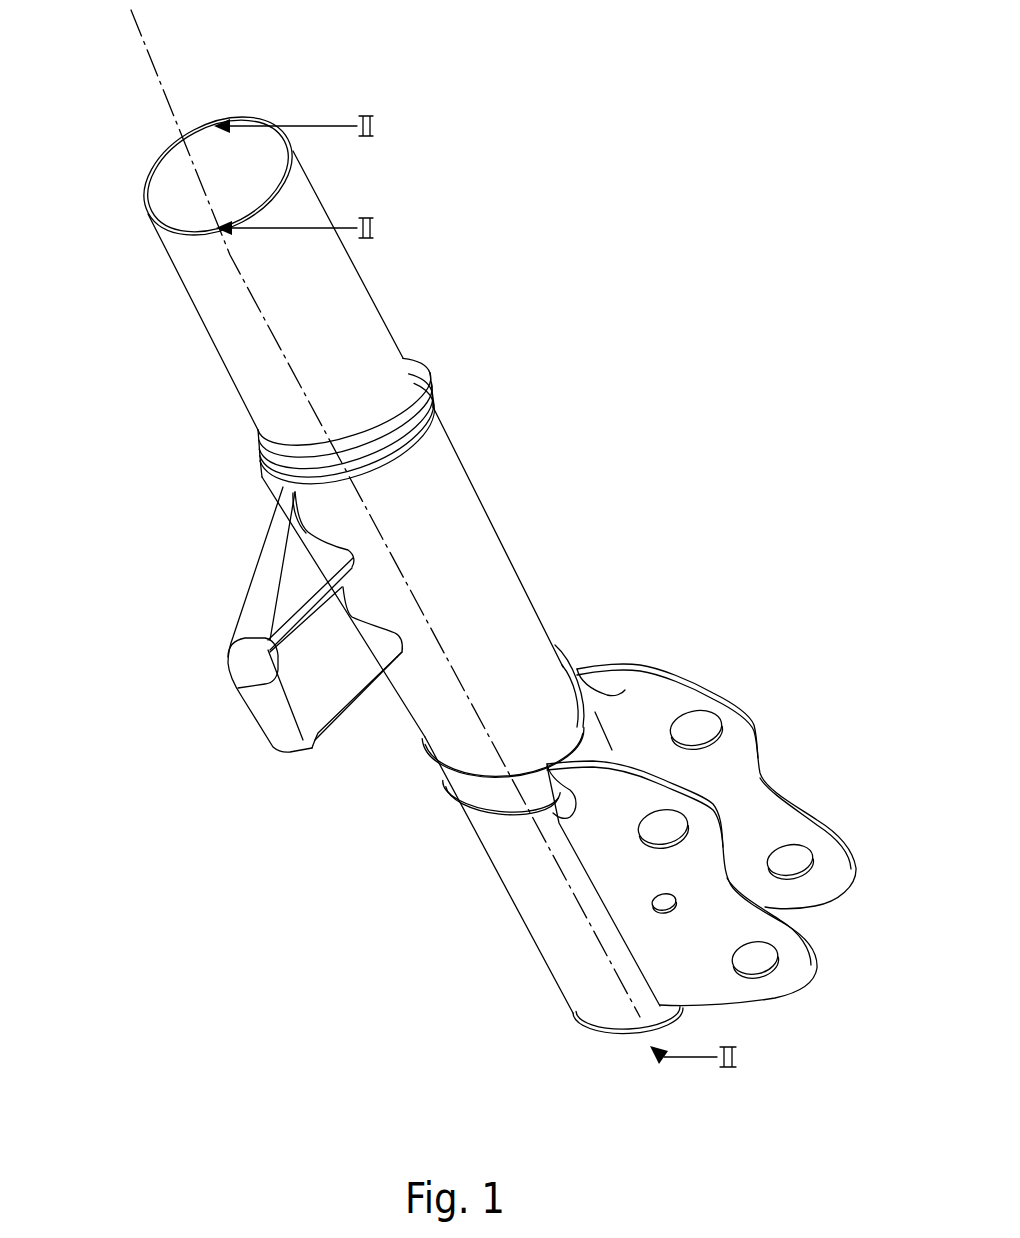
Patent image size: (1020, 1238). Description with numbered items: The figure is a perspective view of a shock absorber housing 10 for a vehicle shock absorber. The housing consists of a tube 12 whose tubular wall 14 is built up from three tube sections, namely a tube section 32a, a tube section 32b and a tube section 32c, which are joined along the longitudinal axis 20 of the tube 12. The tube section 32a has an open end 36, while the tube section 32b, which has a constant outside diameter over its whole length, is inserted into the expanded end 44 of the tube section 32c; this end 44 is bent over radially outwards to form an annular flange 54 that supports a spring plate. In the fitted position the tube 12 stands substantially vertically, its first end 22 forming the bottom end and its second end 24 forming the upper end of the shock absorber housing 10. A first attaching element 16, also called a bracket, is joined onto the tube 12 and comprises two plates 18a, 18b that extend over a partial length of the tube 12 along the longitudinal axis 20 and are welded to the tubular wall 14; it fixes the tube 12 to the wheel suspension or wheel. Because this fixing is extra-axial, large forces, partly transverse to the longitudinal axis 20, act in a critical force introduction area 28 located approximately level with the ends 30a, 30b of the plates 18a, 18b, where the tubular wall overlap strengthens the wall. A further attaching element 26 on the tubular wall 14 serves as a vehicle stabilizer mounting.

The shock absorber housing 10 is at (741, 238).
The tube 12 is at (394, 596).
The tubular wall 14 is at (494, 584).
The first attaching element 16 is at (616, 786).
The plate 18a is at (716, 737).
The plate 18b is at (616, 883).
The longitudinal axis 20 is at (148, 53).
The first end 22 is at (605, 1014).
The second end 24 is at (181, 258).
The further attaching element 26 is at (279, 625).
The critical force introduction area 28 is at (571, 707).
The end of plate 30a is at (587, 677).
The end of plate 30b is at (543, 822).
The tube section 32a is at (542, 918).
The tube section 32b is at (476, 560).
The tube section 32c is at (327, 272).
The open end 36 is at (472, 792).
The end of tube section 44 is at (413, 416).
The annular flange 54 is at (282, 477).